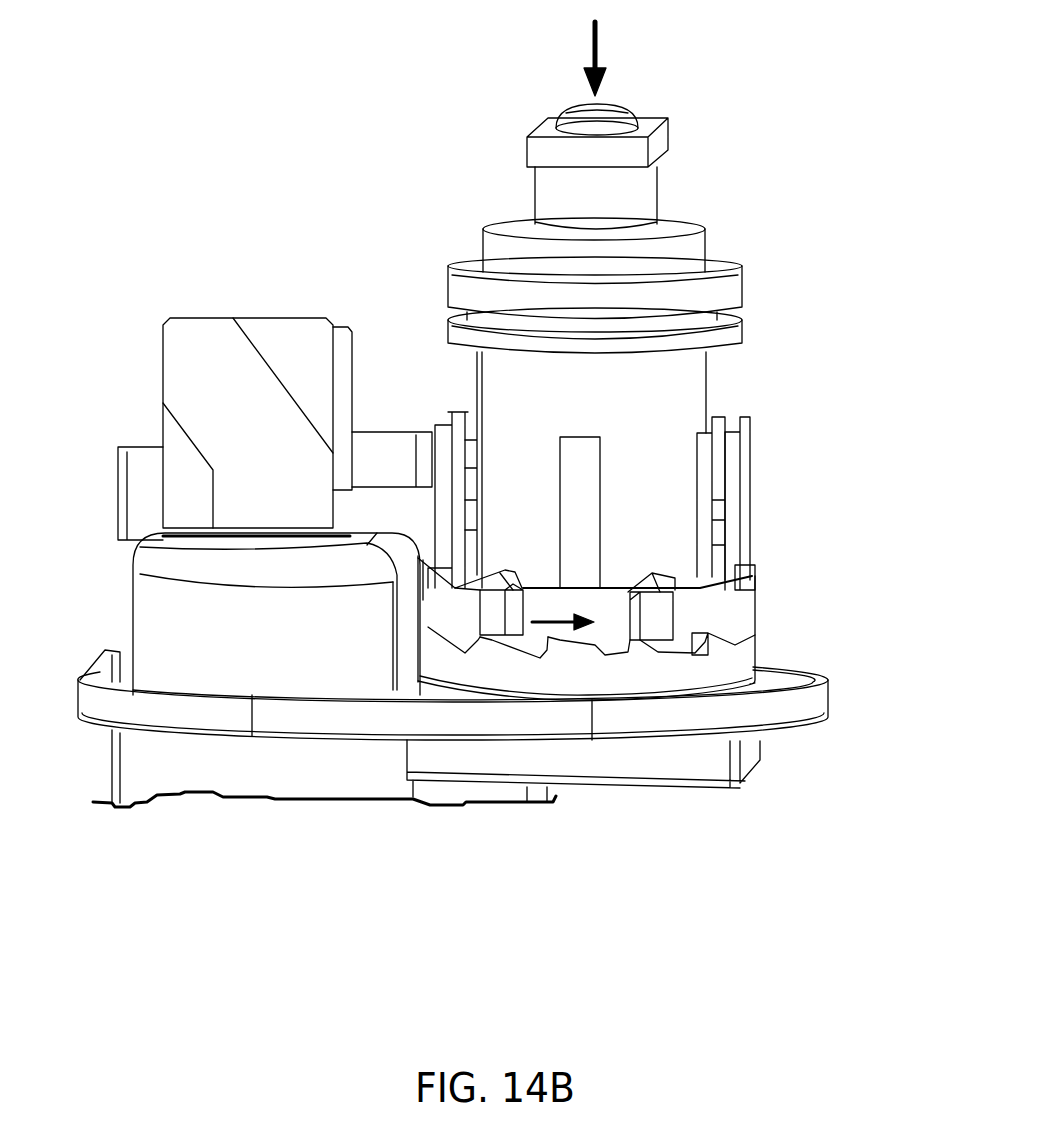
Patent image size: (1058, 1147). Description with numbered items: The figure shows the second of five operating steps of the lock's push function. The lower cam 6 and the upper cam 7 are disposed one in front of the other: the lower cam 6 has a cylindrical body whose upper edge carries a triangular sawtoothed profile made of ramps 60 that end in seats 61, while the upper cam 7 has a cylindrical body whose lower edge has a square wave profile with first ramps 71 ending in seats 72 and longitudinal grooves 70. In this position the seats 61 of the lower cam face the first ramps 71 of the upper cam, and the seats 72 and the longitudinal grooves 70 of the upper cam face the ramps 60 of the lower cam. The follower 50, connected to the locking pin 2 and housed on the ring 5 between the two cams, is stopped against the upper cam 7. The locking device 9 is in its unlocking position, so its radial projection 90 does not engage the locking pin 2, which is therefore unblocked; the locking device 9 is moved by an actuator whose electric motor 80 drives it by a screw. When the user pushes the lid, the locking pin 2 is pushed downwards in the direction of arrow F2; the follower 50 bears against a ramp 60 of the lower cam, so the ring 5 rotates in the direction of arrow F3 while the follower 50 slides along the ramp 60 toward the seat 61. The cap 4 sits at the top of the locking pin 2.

The locking pin 2 is at (685, 258).
The push cap 4 is at (618, 120).
The ring 5 is at (608, 625).
The lower cam 6 is at (710, 677).
The upper cam 7 is at (680, 553).
The locking device 9 is at (218, 352).
The follower 50 is at (497, 608).
The ramp 60 is at (512, 637).
The seat 61 is at (547, 652).
The longitudinal groove 70 is at (567, 467).
The first ramp 71 is at (618, 590).
The seat 72 is at (673, 577).
The electric motor 80 is at (183, 618).
The projection 90 is at (392, 448).
The arrow F2 is at (620, 54).
The arrow F3 is at (553, 582).